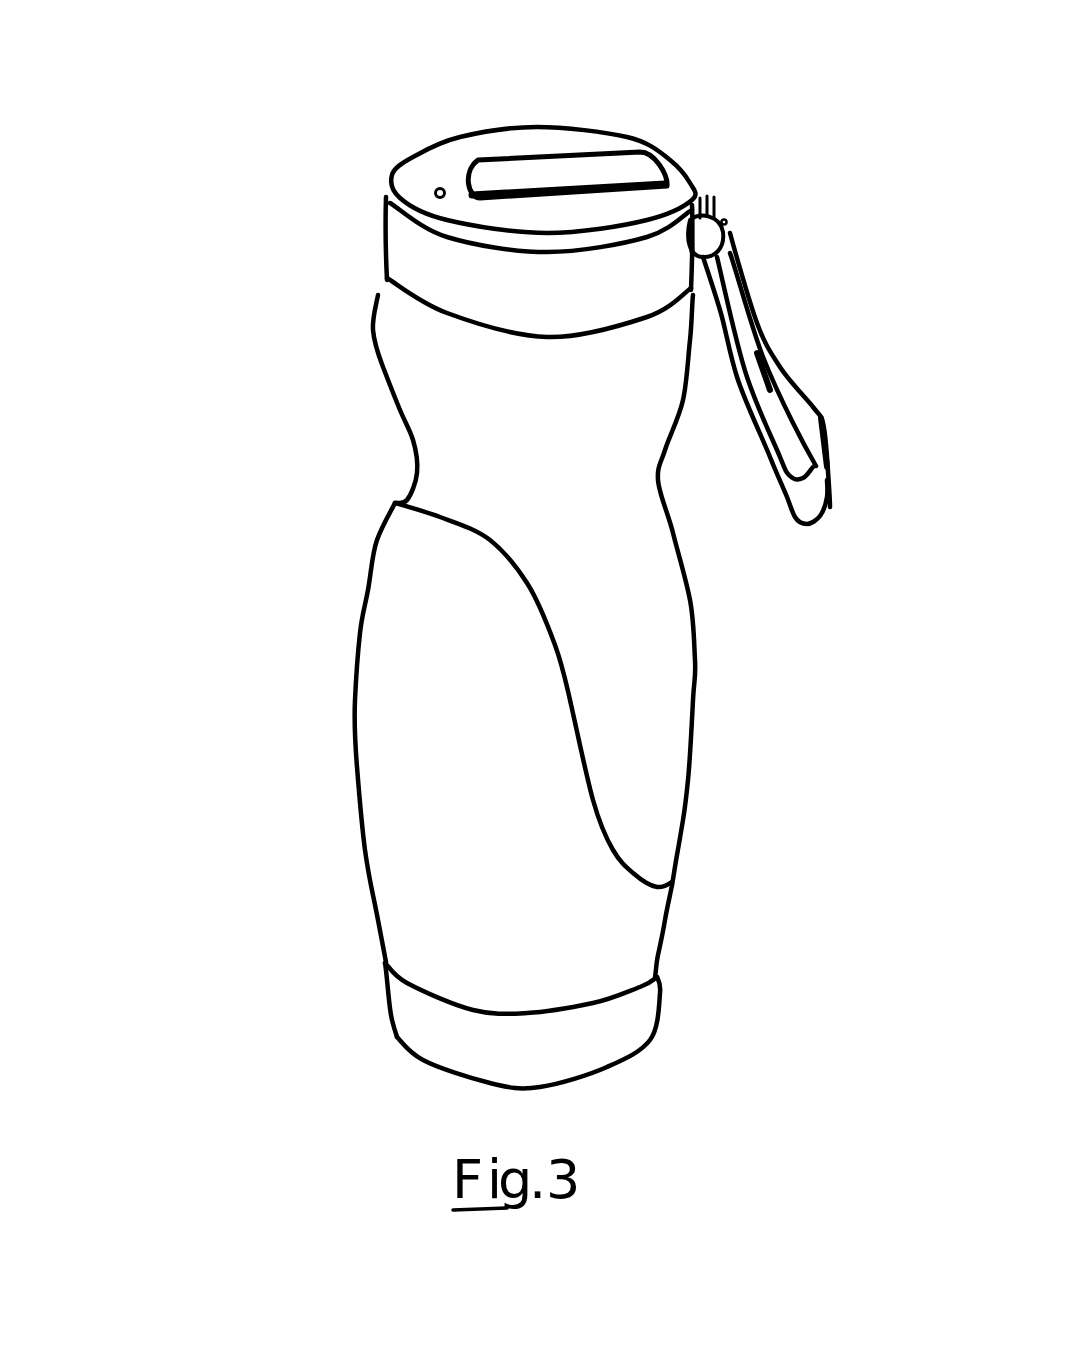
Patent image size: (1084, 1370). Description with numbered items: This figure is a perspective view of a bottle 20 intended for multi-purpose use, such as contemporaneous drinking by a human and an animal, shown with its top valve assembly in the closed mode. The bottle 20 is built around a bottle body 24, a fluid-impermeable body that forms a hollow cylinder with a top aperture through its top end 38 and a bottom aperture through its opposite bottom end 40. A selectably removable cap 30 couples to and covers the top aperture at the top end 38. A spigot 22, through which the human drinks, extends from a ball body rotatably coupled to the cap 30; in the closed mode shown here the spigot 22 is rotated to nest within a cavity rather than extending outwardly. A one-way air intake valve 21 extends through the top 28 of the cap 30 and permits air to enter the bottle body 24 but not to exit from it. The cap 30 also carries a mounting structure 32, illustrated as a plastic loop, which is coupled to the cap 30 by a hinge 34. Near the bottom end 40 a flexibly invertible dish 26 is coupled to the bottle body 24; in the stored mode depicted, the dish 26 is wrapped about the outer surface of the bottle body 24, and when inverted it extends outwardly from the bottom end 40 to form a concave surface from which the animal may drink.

The bottle 20 is at (277, 146).
The one-way air intake valve 21 is at (441, 186).
The spigot 22 is at (587, 172).
The bottle body 24 is at (607, 518).
The dish 26 is at (480, 744).
The top of the cap 28 is at (429, 180).
The cap 30 is at (560, 308).
The mounting structure 32 is at (783, 370).
The hinge 34 is at (722, 211).
The top end 38 is at (317, 283).
The bottom end 40 is at (270, 910).